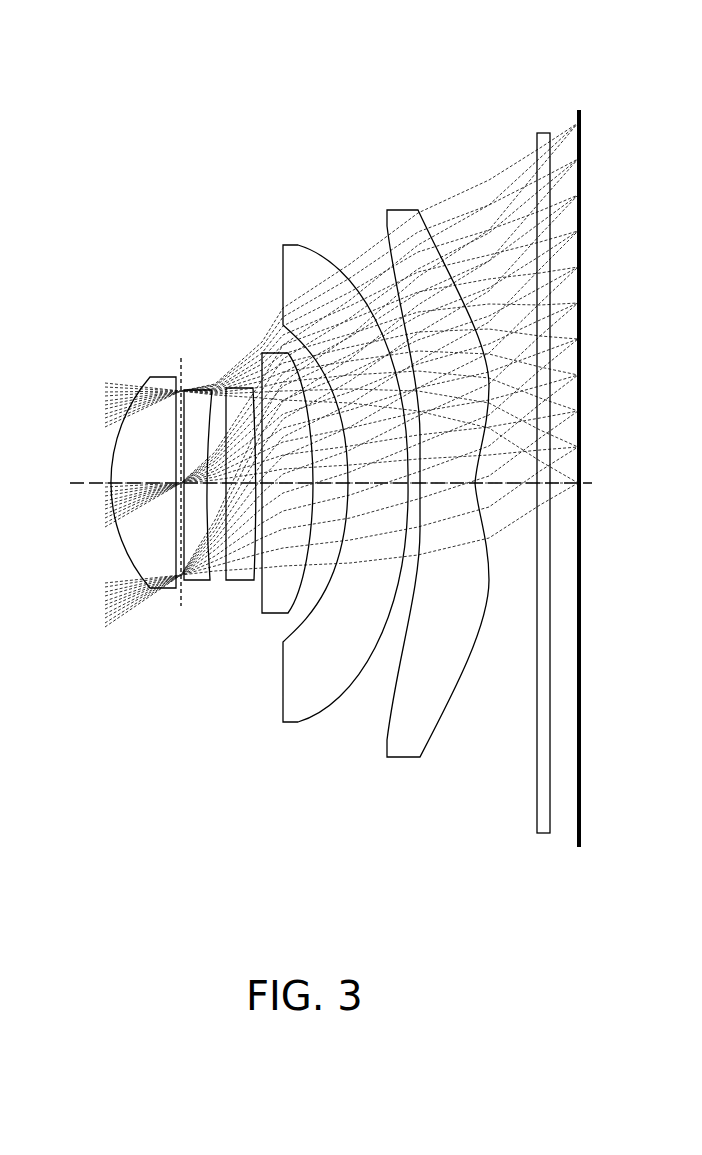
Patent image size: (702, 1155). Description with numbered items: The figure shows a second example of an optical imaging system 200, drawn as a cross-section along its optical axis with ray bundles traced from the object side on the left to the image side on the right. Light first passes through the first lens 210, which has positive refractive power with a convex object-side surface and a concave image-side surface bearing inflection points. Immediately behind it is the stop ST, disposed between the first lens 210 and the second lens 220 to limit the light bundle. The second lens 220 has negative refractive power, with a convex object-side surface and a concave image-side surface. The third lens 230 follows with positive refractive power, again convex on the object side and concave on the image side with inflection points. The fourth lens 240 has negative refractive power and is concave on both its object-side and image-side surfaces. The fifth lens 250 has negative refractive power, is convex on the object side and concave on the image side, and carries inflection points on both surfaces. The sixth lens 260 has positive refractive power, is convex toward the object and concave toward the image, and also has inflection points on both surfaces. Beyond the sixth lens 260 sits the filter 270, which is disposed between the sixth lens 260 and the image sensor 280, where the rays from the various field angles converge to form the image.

The optical imaging system 200 is at (185, 158).
The stop ST is at (181, 357).
The first lens 210 is at (120, 536).
The second lens 220 is at (203, 581).
The third lens 230 is at (243, 582).
The fourth lens 240 is at (275, 617).
The fifth lens 250 is at (290, 722).
The sixth lens 260 is at (402, 759).
The filter 270 is at (537, 813).
The image sensor 280 is at (580, 847).